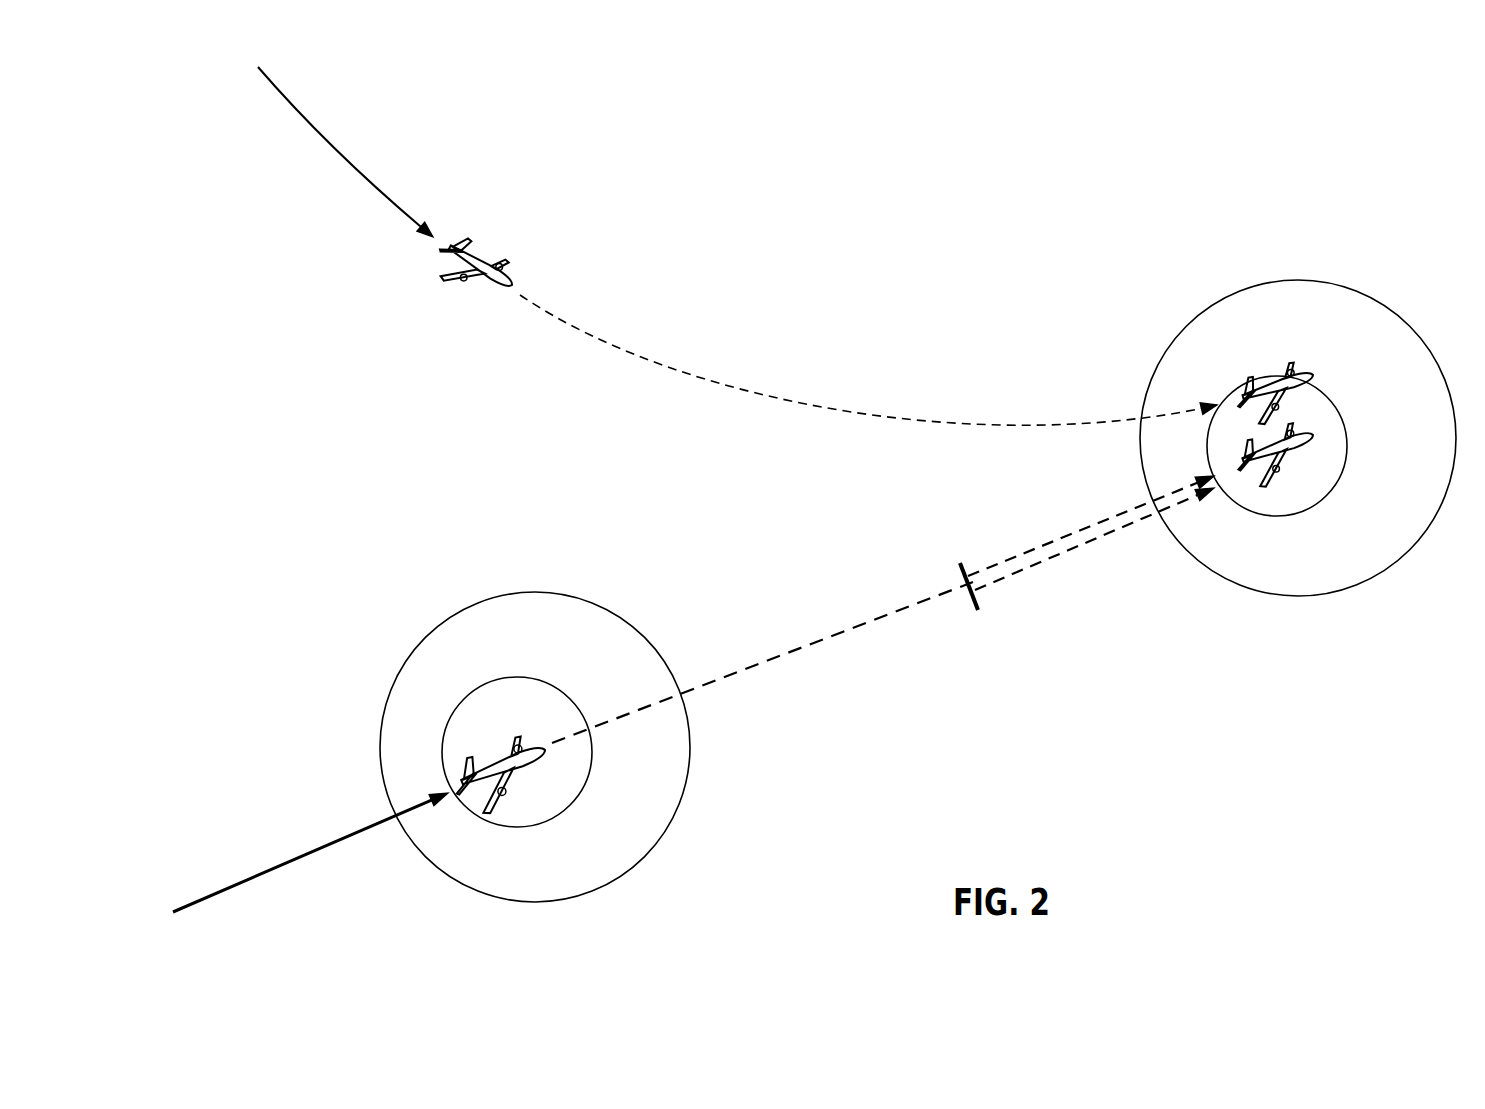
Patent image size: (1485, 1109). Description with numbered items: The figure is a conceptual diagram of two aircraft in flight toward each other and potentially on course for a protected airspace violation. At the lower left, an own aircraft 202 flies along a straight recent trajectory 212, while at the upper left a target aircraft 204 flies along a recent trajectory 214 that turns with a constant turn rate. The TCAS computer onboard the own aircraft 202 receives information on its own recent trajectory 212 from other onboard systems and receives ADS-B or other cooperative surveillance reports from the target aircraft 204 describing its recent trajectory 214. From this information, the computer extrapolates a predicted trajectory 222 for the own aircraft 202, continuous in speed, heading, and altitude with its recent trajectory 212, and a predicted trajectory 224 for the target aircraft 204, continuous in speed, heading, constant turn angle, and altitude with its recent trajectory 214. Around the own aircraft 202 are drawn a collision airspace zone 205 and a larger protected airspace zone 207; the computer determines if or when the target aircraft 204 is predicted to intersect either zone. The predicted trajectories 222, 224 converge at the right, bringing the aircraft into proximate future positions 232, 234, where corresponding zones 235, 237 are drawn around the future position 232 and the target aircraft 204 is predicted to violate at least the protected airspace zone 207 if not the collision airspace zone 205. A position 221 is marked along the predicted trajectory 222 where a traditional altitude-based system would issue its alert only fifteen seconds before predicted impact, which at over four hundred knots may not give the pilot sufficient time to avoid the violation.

The own aircraft 202 is at (530, 818).
The target aircraft 204 is at (420, 312).
The collision airspace zone 205 is at (454, 752).
The protected airspace zone 207 is at (493, 747).
The recent trajectory of own aircraft 212 is at (295, 846).
The recent trajectory of target aircraft 214 is at (312, 152).
The position along predicted trajectory 221 is at (931, 631).
The predicted trajectory of own aircraft 222 is at (883, 609).
The predicted trajectory of target aircraft 224 is at (868, 346).
The future position of own aircraft 232 is at (1307, 499).
The future position of target aircraft 234 is at (1258, 325).
The inner zone at future position 235 is at (1215, 446).
The outer zone at future position 237 is at (1249, 438).